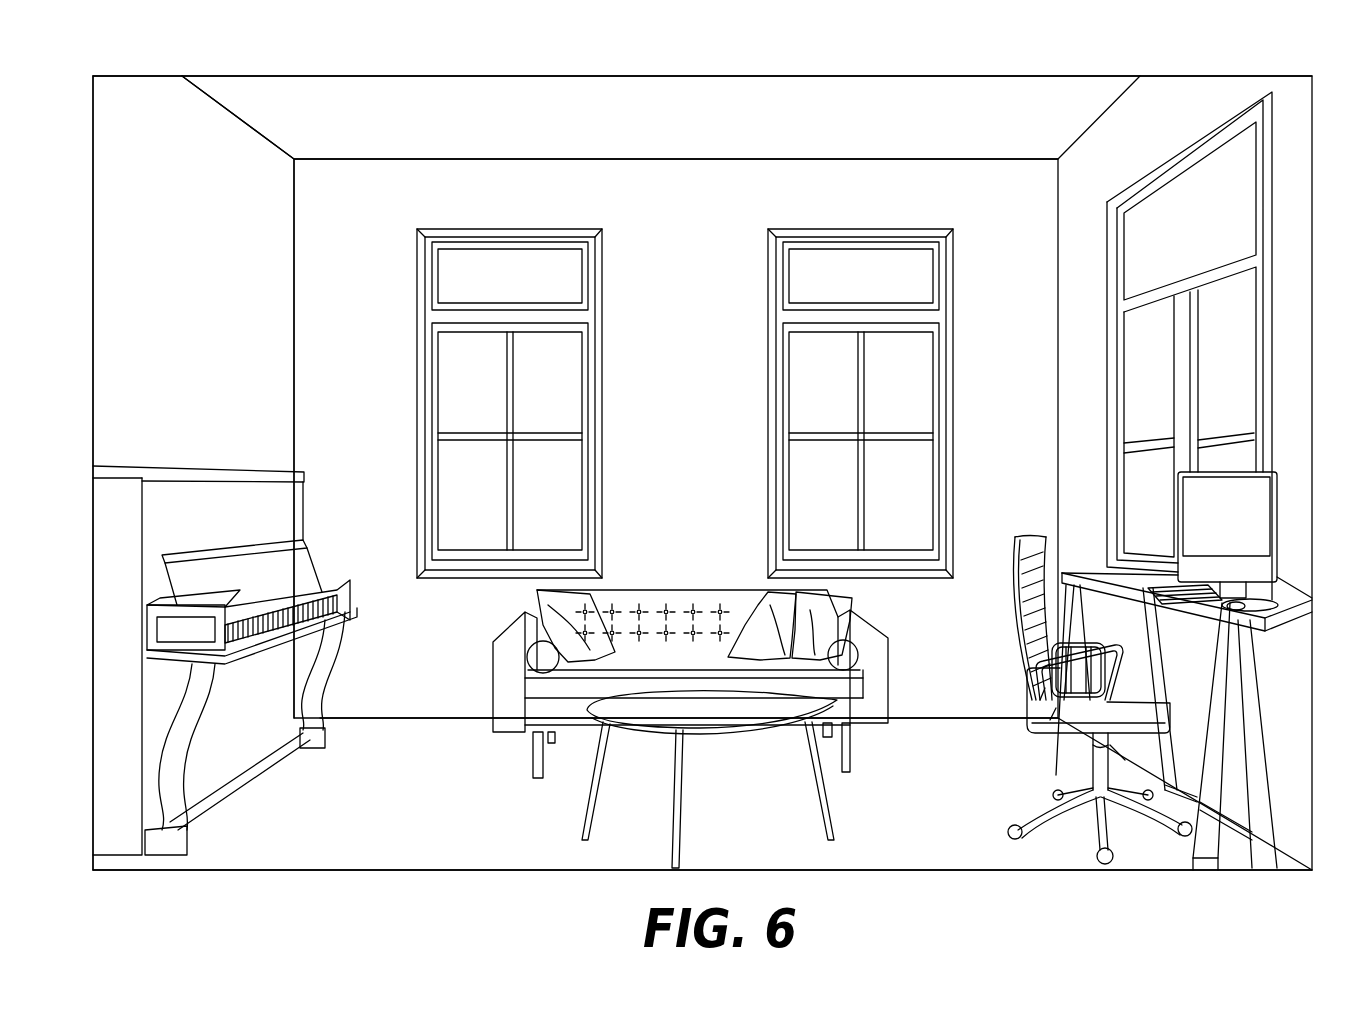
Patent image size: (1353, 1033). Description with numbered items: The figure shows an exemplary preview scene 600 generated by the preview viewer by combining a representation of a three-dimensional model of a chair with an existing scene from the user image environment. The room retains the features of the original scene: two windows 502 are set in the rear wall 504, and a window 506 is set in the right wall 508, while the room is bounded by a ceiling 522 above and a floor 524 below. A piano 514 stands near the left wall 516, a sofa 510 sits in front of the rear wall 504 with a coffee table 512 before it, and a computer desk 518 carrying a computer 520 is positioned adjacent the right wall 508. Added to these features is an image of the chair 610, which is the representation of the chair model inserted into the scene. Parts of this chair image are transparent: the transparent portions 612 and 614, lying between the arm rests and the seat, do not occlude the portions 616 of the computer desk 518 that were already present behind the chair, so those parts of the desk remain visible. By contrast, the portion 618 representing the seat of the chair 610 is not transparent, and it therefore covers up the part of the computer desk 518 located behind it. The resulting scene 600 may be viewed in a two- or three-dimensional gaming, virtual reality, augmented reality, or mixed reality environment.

The preview scene 600 is at (457, 72).
The rear wall 504 is at (655, 227).
The ceiling 522 is at (972, 103).
The right wall 508 is at (1189, 319).
The window 506 is at (1128, 187).
The left wall 516 is at (253, 310).
The windows 502 is at (604, 385).
The piano 514 is at (278, 508).
The sofa 510 is at (893, 650).
The coffee table 512 is at (727, 703).
The floor 524 is at (450, 845).
The computer desk 518 is at (1213, 848).
The computer 520 is at (1277, 540).
The chair 610 is at (1030, 645).
The transparent portion 612 is at (1124, 700).
The transparent portion 614 is at (1053, 733).
The portions of computer desk 616 is at (1093, 632).
The seat portion 618 is at (1053, 738).